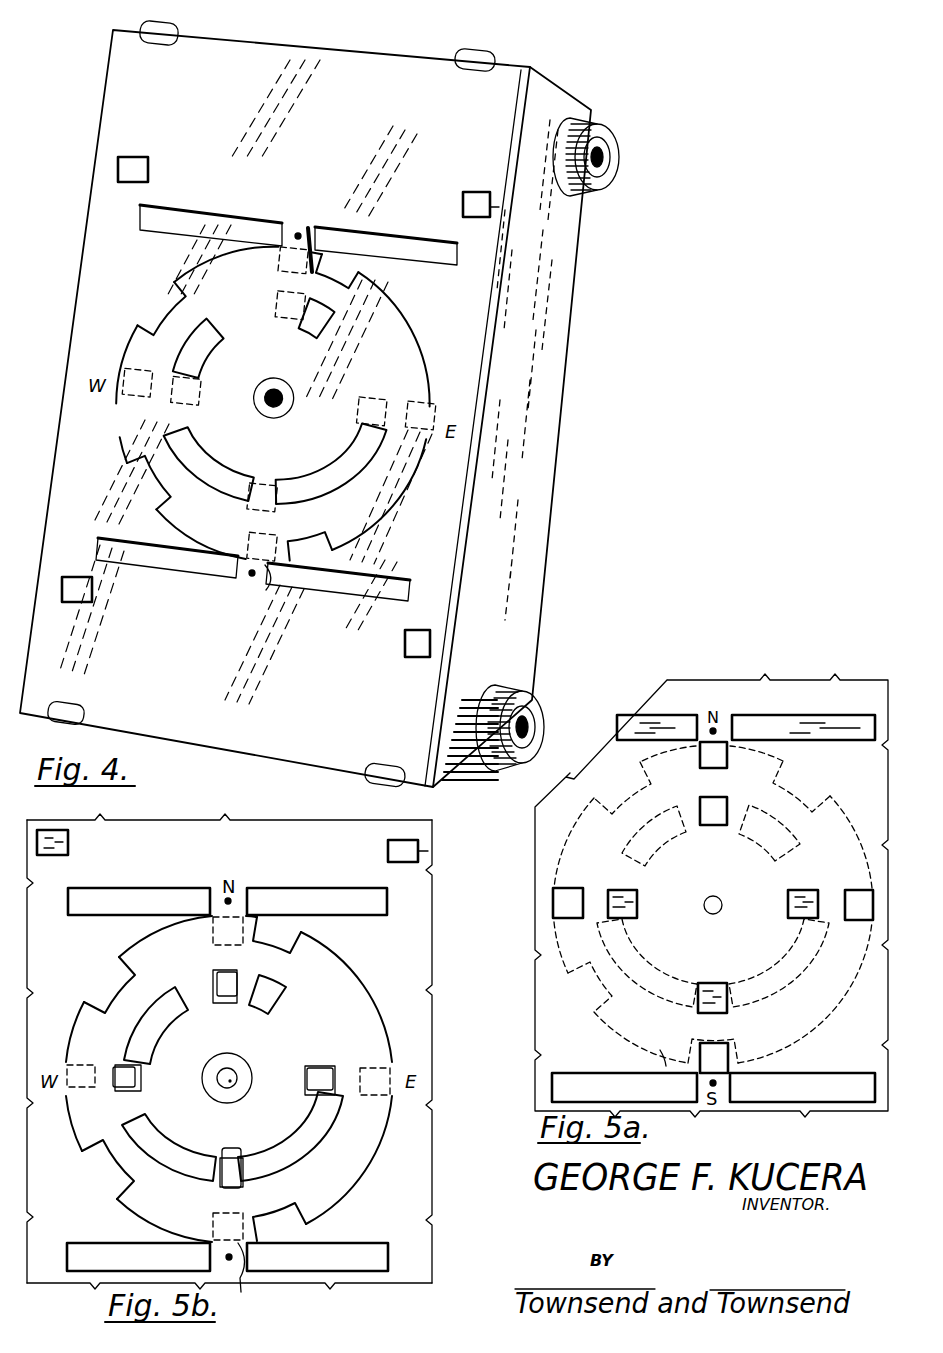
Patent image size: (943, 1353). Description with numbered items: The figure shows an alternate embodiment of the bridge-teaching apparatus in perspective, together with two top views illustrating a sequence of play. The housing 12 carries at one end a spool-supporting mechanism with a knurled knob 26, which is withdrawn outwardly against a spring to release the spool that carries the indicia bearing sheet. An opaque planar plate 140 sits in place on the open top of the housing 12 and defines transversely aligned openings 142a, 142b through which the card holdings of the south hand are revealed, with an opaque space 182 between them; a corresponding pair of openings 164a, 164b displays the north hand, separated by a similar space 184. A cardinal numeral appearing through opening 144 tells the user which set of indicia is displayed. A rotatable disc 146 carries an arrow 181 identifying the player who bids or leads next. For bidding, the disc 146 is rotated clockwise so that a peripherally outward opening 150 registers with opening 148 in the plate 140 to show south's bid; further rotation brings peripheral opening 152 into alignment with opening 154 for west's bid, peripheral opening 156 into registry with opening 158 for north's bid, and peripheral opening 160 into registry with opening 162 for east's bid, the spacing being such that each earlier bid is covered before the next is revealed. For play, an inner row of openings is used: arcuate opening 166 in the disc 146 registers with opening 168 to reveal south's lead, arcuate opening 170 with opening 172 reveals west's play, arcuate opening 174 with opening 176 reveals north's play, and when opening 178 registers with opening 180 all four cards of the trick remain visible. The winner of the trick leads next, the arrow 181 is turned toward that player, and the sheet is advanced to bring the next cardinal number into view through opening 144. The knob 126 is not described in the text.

In FIG. 4, the housing 12 is at (94, 58).
In FIG. 4, the knurled knob 26 is at (534, 694).
In FIG. 4, the upper adjustment knob 126 is at (600, 168).
In FIG. 4, the opaque planar plate 140 is at (514, 84).
In FIG. 4, the opening 144 is at (468, 194).
In FIG. 5B, the opening 144 is at (388, 850).
In FIG. 4, the rotatable disc 146 is at (413, 344).
In FIG. 5B, the rotatable disc 146 is at (354, 996).
In FIG. 5A, the rotatable disc 146 is at (597, 1018).
In FIG. 4, the opening 148 is at (252, 536).
In FIG. 5B, the opening 148 is at (211, 1222).
In FIG. 5A, the opening 148 is at (718, 1043).
In FIG. 4, the peripheral opening 150 is at (322, 556).
In FIG. 5B, the peripheral opening 150 is at (290, 1198).
In FIG. 5A, the peripheral opening 150 is at (738, 1042).
In FIG. 4, the peripheral opening 152 is at (140, 462).
In FIG. 5B, the peripheral opening 152 is at (110, 1146).
In FIG. 5A, the peripheral opening 152 is at (590, 975).
In FIG. 4, the opening 154 is at (134, 398).
In FIG. 5B, the opening 154 is at (88, 1065).
In FIG. 5A, the opening 154 is at (582, 891).
In FIG. 4, the peripheral opening 156 is at (160, 330).
In FIG. 5B, the peripheral opening 156 is at (122, 970).
In FIG. 5A, the peripheral opening 156 is at (614, 802).
In FIG. 4, the opening 158 is at (280, 262).
In FIG. 5B, the opening 158 is at (222, 932).
In FIG. 5A, the opening 158 is at (715, 768).
In FIG. 4, the peripheral opening 160 is at (360, 266).
In FIG. 5B, the peripheral opening 160 is at (298, 932).
In FIG. 5A, the peripheral opening 160 is at (778, 776).
In FIG. 4, the opening 162 is at (432, 407).
In FIG. 5B, the opening 162 is at (358, 1096).
In FIG. 5A, the opening 162 is at (852, 920).
In FIG. 4, the opening 164a is at (168, 221).
In FIG. 5B, the opening 164a is at (110, 916).
In FIG. 5A, the opening 164a is at (662, 714).
In FIG. 4, the opening 164b is at (360, 232).
In FIG. 5B, the opening 164b is at (368, 916).
In FIG. 5A, the opening 164b is at (782, 714).
In FIG. 4, the arcuate opening 166 is at (350, 472).
In FIG. 5B, the arcuate opening 166 is at (290, 1169).
In FIG. 5A, the arcuate opening 166 is at (797, 970).
In FIG. 4, the opening 168 is at (265, 486).
In FIG. 5B, the opening 168 is at (234, 1148).
In FIG. 5A, the opening 168 is at (712, 986).
In FIG. 4, the arcuate opening 170 is at (218, 468).
In FIG. 5B, the arcuate opening 170 is at (176, 1138).
In FIG. 5A, the arcuate opening 170 is at (642, 938).
In FIG. 4, the opening 172 is at (190, 402).
In FIG. 5B, the opening 172 is at (118, 1095).
In FIG. 5A, the opening 172 is at (633, 910).
In FIG. 4, the arcuate opening 174 is at (204, 360).
In FIG. 5B, the arcuate opening 174 is at (155, 999).
In FIG. 5A, the arcuate opening 174 is at (655, 864).
In FIG. 4, the opening 176 is at (298, 316).
In FIG. 5B, the opening 176 is at (228, 1008).
In FIG. 5A, the opening 176 is at (703, 826).
In FIG. 4, the opening 178 is at (323, 322).
In FIG. 5B, the opening 178 is at (262, 987).
In FIG. 5A, the opening 178 is at (781, 855).
In FIG. 4, the opening 180 is at (358, 408).
In FIG. 5B, the opening 180 is at (325, 1068).
In FIG. 5A, the opening 180 is at (792, 910).
In FIG. 4, the arrow 181 is at (266, 592).
In FIG. 5B, the arrow 181 is at (250, 1277).
In FIG. 5A, the arrow 181 is at (658, 1048).
In FIG. 4, the opaque space 182 is at (243, 594).
In FIG. 4, the space 184 is at (286, 223).
In FIG. 4, the opening 142a is at (148, 563).
In FIG. 5B, the opening 142a is at (142, 1245).
In FIG. 5A, the opening 142a is at (556, 1073).
In FIG. 4, the opening 142b is at (320, 586).
In FIG. 5B, the opening 142b is at (328, 1245).
In FIG. 5A, the opening 142b is at (792, 1073).